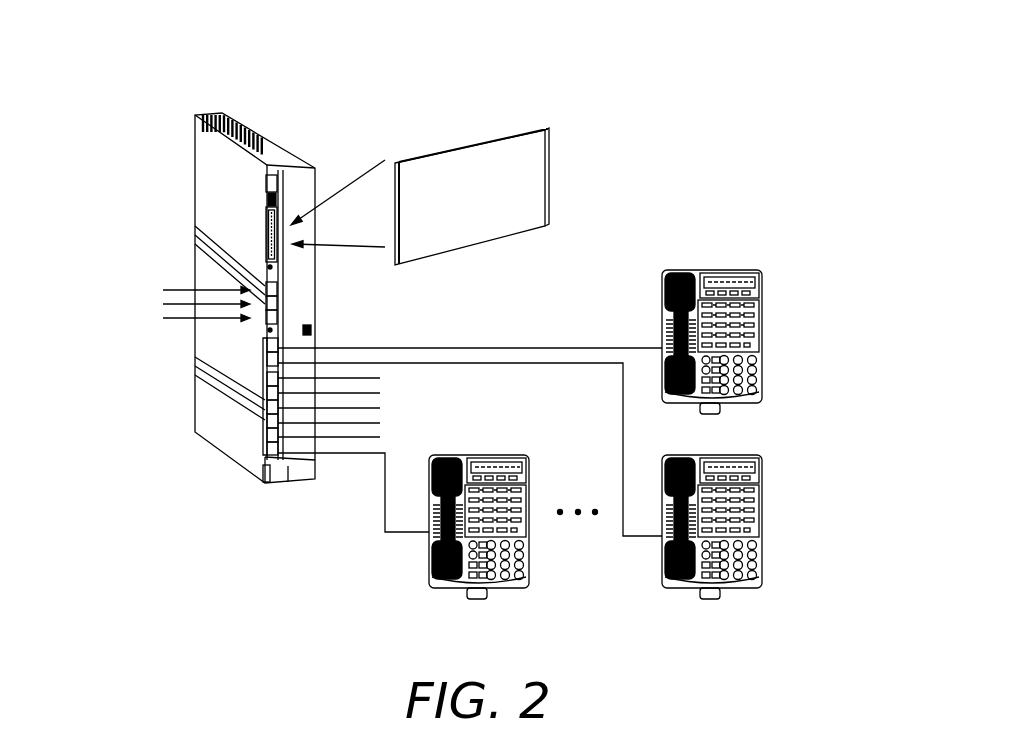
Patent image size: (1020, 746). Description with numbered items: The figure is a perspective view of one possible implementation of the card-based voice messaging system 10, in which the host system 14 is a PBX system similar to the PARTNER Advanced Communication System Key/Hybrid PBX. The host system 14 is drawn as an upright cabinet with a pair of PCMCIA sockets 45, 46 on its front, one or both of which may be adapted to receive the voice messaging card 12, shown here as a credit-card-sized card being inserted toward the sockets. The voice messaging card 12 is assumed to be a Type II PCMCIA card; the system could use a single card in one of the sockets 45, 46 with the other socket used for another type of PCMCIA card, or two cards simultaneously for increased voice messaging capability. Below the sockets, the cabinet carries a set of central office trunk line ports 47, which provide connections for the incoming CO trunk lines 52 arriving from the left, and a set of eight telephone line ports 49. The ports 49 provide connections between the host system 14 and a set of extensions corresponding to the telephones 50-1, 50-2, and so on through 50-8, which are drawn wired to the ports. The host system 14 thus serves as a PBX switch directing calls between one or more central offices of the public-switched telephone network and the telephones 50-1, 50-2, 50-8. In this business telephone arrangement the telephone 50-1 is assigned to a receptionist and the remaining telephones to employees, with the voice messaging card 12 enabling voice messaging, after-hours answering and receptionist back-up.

The card-based voice messaging system 10 is at (670, 97).
The voice messaging card 12 is at (546, 172).
The host system 14 is at (195, 172).
The PCMCIA socket 45 is at (277, 213).
The PCMCIA socket 46 is at (279, 211).
The central office trunk line ports 47 is at (279, 297).
The telephone line ports 49 is at (252, 458).
The telephone 50-1 is at (763, 296).
The telephone 50-2 is at (763, 515).
The telephone 50-8 is at (430, 564).
The central office trunk lines 52 is at (110, 250).